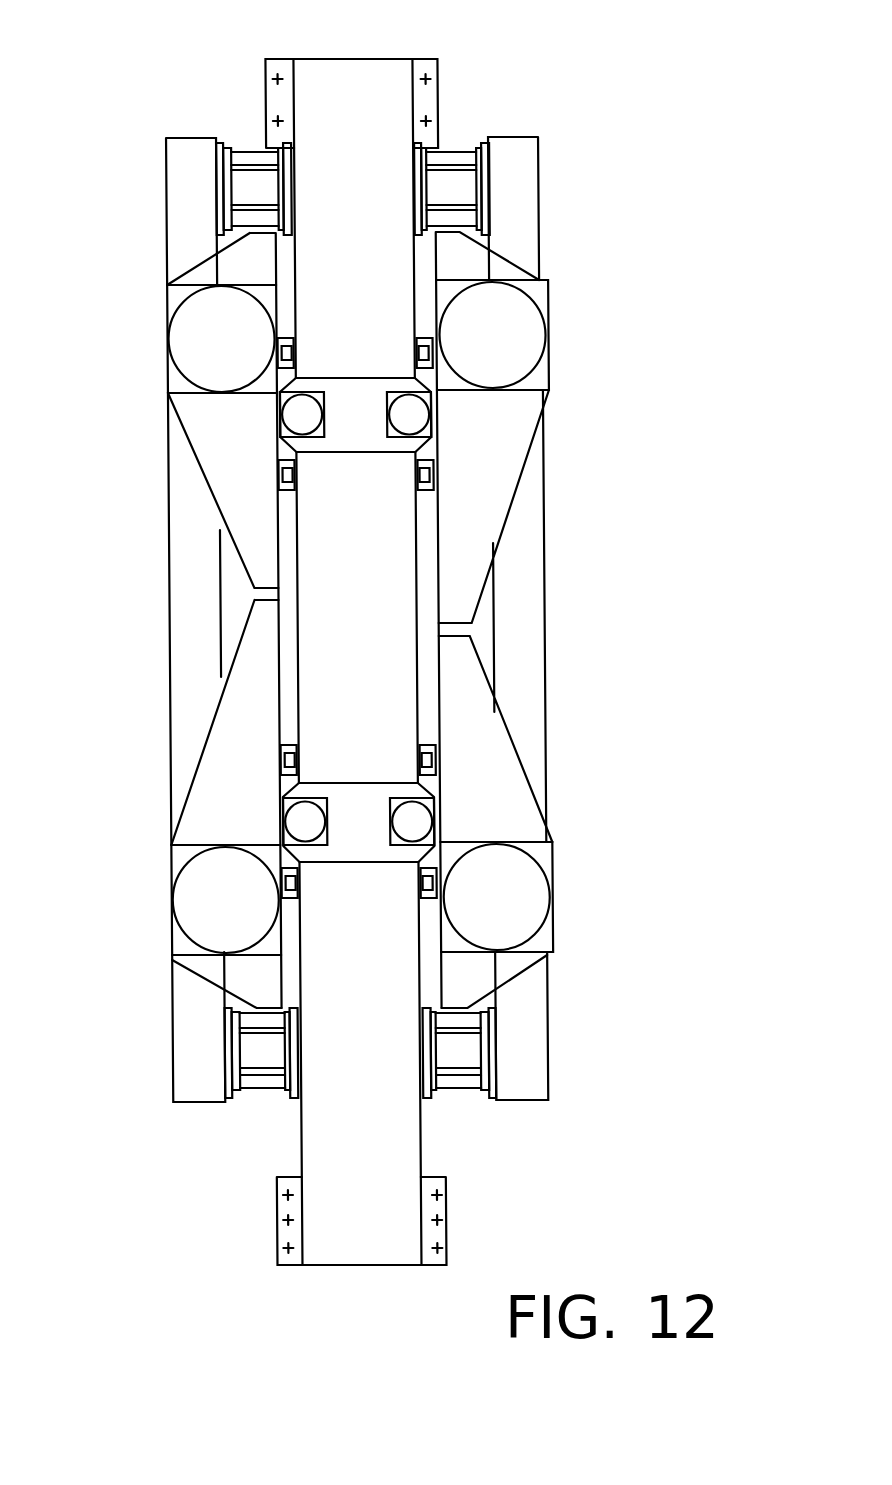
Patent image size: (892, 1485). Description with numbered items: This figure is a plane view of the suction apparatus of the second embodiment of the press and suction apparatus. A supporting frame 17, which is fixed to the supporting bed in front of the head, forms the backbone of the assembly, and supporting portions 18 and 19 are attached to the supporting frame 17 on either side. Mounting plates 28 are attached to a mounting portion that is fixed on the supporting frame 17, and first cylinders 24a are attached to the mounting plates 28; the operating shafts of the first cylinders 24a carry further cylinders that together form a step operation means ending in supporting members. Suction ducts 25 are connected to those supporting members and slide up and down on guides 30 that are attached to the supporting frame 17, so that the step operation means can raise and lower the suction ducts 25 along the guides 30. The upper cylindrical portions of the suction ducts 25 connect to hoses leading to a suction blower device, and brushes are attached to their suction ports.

The supporting frame 17 is at (309, 78).
The supporting portion 18 is at (173, 638).
The supporting portion 19 is at (533, 575).
The suction duct 25 is at (168, 295).
The first cylinder 24a is at (286, 417).
The mounting plate 28 is at (331, 853).
The guide 30 is at (415, 353).